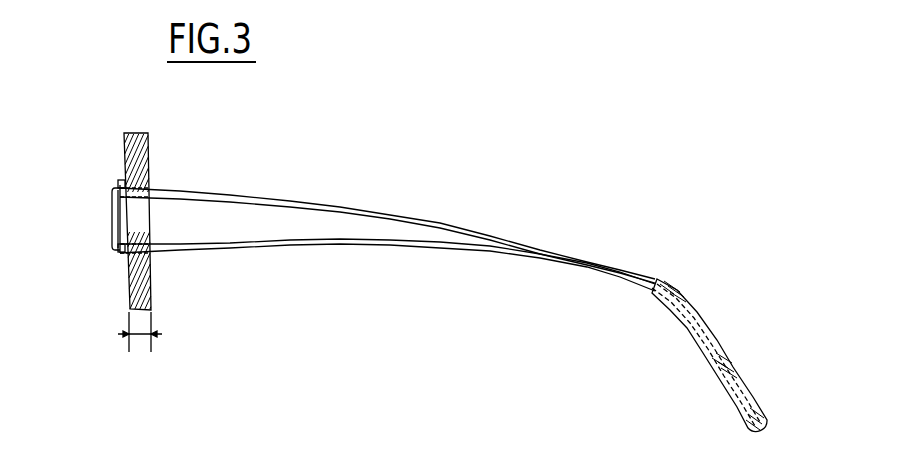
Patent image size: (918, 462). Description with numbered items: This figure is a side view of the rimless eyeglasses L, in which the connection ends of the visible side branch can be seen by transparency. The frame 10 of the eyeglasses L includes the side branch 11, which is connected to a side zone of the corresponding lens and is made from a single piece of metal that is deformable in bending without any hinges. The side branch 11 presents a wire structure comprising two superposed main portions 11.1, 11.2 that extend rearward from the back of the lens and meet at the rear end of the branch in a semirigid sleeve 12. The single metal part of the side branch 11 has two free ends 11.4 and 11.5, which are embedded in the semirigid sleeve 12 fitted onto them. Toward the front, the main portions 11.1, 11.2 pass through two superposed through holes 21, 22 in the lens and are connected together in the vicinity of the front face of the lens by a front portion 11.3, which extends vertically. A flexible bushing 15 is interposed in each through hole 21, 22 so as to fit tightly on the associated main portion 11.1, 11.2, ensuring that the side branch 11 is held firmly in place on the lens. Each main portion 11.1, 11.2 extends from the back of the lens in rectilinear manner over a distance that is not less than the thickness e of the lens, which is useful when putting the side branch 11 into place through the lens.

The frame 10 is at (416, 272).
The side branch 11 is at (416, 280).
The main portion 11.1 is at (243, 197).
The main portion 11.2 is at (292, 247).
The front portion 11.3 is at (112, 220).
The free end 11.4 is at (718, 343).
The free end 11.5 is at (721, 373).
The semirigid sleeve 12 is at (715, 322).
The flexible bushing 15 is at (120, 182).
The through hole 21 is at (140, 180).
The through hole 22 is at (148, 272).
The eyeglasses L is at (540, 179).
The thickness of the lens e is at (140, 334).